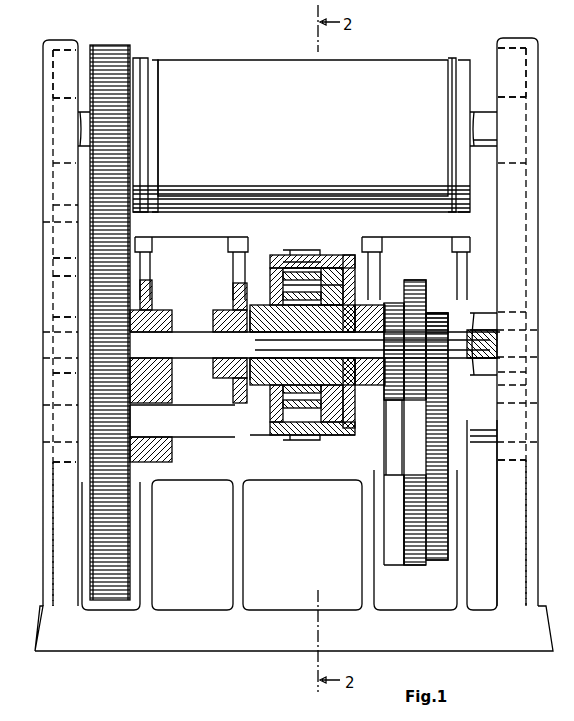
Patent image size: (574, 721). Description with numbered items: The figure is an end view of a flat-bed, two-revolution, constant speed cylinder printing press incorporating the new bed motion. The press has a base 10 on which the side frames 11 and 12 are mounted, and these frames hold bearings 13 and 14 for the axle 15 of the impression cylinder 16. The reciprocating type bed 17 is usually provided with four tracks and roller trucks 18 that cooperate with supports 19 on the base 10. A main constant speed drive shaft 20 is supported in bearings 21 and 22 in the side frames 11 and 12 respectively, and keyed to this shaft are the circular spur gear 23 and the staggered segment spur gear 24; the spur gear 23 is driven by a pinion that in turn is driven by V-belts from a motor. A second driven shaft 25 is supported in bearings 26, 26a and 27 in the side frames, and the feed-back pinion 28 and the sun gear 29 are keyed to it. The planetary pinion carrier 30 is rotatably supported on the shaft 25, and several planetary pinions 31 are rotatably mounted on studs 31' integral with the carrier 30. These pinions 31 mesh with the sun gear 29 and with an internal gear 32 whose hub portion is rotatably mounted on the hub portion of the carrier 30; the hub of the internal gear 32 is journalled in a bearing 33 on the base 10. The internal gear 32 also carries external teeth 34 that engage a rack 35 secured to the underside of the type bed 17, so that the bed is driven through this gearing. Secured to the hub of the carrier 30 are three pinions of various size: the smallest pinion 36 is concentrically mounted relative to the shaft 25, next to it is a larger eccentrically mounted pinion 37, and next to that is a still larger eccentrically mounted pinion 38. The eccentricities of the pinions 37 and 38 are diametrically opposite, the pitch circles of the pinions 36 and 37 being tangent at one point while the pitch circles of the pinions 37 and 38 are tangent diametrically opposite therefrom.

The base 10 is at (233, 651).
The side frame 11 is at (43, 297).
The side frame 12 is at (538, 238).
The bearing 13 is at (76, 92).
The bearing 14 is at (520, 92).
The axle 15 is at (86, 128).
The impression cylinder 16 is at (301, 135).
The bed 17 is at (271, 210).
The roller trucks 18 is at (235, 240).
The supports 19 is at (455, 240).
The main constant speed drive shaft 20 is at (490, 434).
The bearing 21 is at (73, 464).
The bearing 22 is at (514, 466).
The circular spur gear 23 is at (130, 538).
The staggered segment spur gear 24 is at (392, 528).
The second driven shaft 25 is at (188, 335).
The bearing 26 is at (75, 308).
The bearing 26a is at (153, 312).
The bearing 27 is at (489, 312).
The feed-back pinion 28 is at (133, 350).
The sun gear 29 is at (302, 362).
The planetary pinion carrier 30 is at (340, 435).
The planetary pinions 31 is at (284, 329).
The studs 31' is at (325, 345).
The internal gear 32 is at (320, 262).
The bearing 33 is at (372, 305).
The external teeth 34 is at (313, 250).
The rack 35 is at (292, 249).
The smallest pinion 36 is at (437, 303).
The eccentrically mounted pinion 37 is at (415, 400).
The eccentrically mounted pinion 38 is at (395, 400).